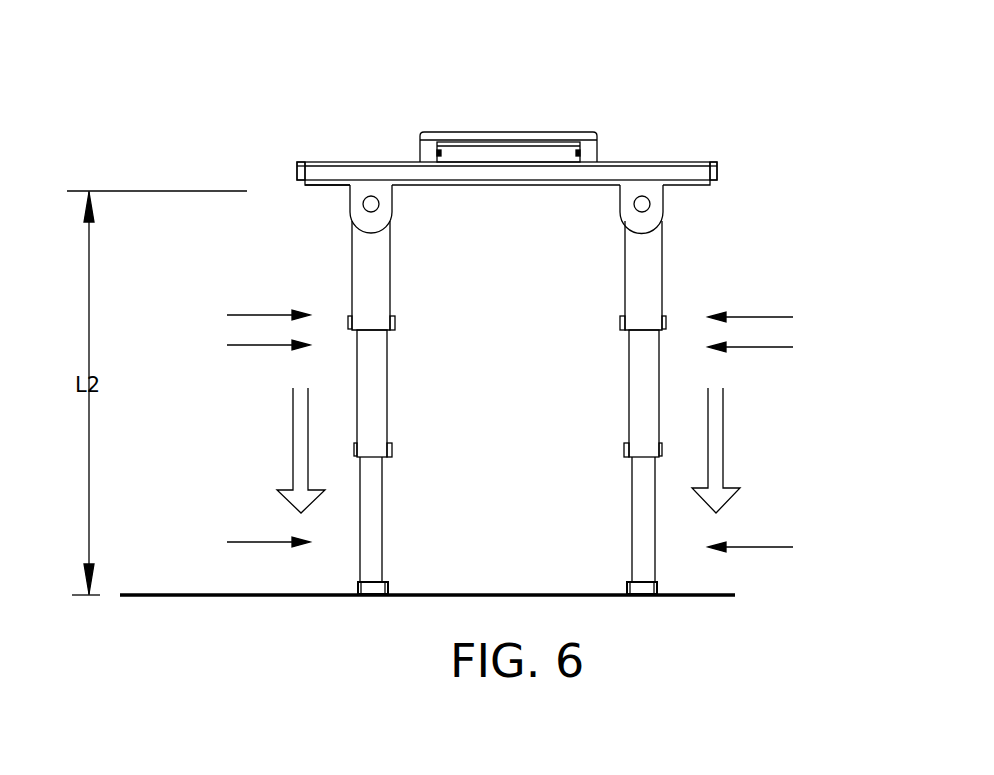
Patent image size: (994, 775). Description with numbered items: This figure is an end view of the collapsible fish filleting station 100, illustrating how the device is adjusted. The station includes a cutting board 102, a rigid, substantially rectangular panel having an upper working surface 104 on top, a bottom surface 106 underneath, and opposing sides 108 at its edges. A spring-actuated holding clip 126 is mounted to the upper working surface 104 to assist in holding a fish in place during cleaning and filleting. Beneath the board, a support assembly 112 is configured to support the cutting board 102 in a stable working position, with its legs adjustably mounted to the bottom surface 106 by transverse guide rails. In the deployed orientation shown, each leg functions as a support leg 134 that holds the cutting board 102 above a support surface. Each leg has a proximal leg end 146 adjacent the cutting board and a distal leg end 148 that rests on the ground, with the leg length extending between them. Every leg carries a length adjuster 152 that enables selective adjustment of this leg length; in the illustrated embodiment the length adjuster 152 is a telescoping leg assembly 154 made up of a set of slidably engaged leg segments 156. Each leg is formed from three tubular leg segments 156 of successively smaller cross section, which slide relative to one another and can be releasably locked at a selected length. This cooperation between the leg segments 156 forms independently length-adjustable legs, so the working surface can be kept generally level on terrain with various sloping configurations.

The collapsible fish filleting station 100 is at (700, 109).
The cutting board 102 is at (347, 130).
The upper working surface 104 is at (380, 162).
The bottom surface 106 is at (560, 186).
The opposing sides 108 is at (297, 168).
The support assembly 112 is at (495, 568).
The spring-actuated holding clip 126 is at (517, 131).
The support leg 134 is at (507, 472).
The proximal leg end 146 is at (350, 226).
The distal leg end 148 is at (358, 574).
The length adjuster 152 is at (504, 318).
The telescoping leg assembly 154 is at (504, 348).
The leg segments 156 is at (390, 285).